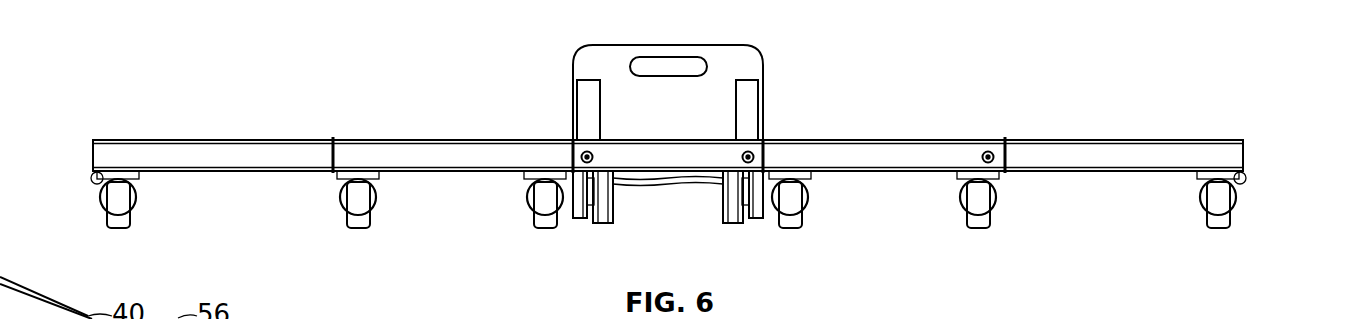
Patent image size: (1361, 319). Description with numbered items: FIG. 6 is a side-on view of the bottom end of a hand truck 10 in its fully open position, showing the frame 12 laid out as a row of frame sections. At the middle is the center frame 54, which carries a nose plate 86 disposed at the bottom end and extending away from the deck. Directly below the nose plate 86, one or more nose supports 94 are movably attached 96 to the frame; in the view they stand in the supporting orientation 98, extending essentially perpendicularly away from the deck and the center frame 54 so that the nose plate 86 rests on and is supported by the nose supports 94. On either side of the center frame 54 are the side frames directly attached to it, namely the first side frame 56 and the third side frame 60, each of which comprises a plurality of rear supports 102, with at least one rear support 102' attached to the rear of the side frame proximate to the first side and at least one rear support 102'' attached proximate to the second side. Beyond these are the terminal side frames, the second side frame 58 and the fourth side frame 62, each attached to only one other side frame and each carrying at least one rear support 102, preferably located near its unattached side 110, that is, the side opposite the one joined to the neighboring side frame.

The mobile cart / stand assembly 10 is at (866, 30).
The base frame 12 is at (266, 73).
The center frame 54 is at (690, 180).
The first side frame 56 is at (906, 138).
The second side frame 58 is at (1096, 138).
The third side frame 60 is at (400, 138).
The fourth side frame 62 is at (205, 139).
The nose plate 86 is at (761, 50).
The nose supports 94 is at (586, 101).
The movable attachment 96 is at (604, 102).
The supporting orientation 98 is at (668, 70).
The rear supports 102 is at (672, 217).
The rear support proximate to the first side 102' is at (820, 217).
The rear support proximate to the second side 102'' is at (675, 217).
The unattached side 110 is at (92, 157).